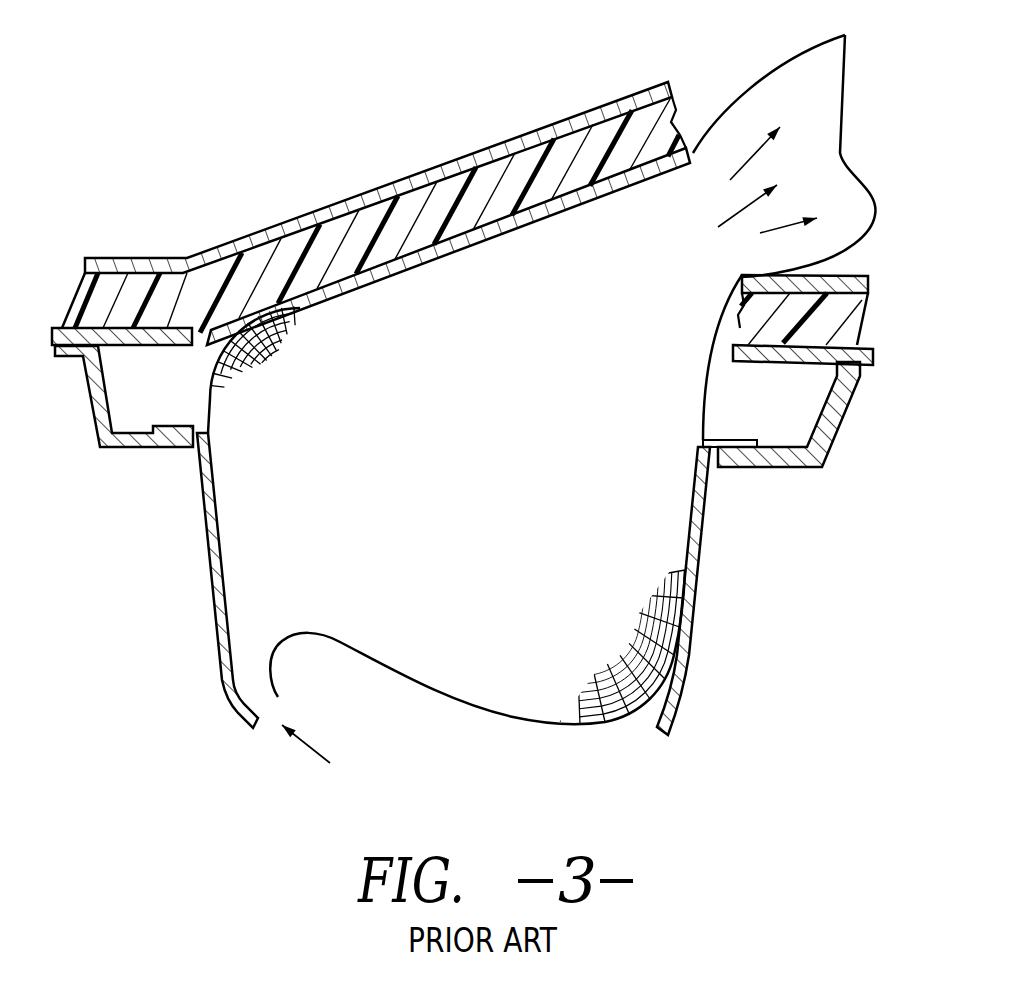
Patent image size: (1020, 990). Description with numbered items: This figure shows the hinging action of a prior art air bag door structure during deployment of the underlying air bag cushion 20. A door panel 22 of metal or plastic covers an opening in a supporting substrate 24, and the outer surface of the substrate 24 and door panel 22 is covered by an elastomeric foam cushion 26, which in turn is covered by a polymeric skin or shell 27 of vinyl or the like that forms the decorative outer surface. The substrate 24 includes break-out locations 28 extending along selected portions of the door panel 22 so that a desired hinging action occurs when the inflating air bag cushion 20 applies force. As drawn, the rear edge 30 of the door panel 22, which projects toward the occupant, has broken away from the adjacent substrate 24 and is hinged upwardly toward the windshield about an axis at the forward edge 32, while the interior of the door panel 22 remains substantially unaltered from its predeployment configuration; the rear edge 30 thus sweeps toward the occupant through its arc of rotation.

The air bag cushion 20 is at (593, 727).
The door panel 22 is at (391, 185).
The supporting substrate 24 is at (865, 273).
The cushion 26 is at (676, 117).
The polymeric skin or shell 27 is at (432, 168).
The break-out locations 28 is at (202, 338).
The rear edge 30 is at (687, 167).
The forward edge 32 is at (212, 343).